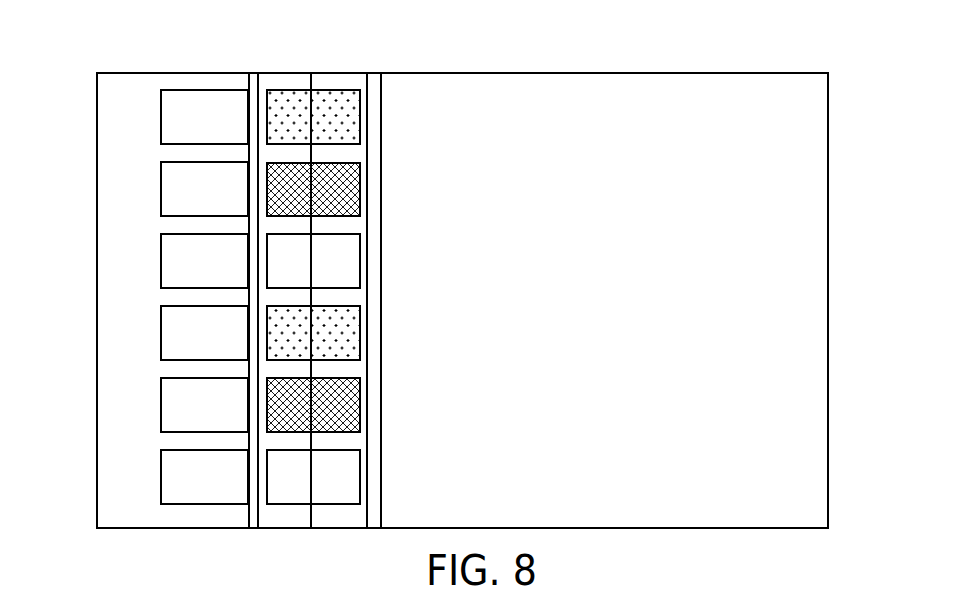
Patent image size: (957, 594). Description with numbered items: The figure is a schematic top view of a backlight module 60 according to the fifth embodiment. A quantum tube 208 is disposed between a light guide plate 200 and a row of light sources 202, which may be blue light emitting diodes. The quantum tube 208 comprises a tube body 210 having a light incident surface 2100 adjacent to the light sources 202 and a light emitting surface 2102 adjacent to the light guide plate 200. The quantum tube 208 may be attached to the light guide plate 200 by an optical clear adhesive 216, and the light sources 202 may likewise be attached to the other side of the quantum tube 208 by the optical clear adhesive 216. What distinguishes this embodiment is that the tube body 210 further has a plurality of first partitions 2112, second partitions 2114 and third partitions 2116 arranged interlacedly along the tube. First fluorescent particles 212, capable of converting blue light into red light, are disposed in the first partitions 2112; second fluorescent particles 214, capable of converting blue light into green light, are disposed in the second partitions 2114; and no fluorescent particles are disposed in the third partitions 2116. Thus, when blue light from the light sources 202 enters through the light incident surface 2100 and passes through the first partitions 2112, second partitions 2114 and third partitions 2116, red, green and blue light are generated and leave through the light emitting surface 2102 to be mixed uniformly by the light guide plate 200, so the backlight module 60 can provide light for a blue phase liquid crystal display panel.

The backlight module 60 is at (748, 44).
The light guide plate 200 is at (665, 329).
The light sources 202 is at (216, 489).
The quantum tube 208 is at (317, 50).
The tube body 210 is at (350, 73).
The optical clear adhesive 216 is at (252, 73).
The light incident surface 2100 is at (256, 152).
The light emitting surface 2102 is at (367, 353).
The first fluorescent particles 212 is at (353, 102).
The second fluorescent particles 214 is at (355, 178).
The first partitions 2112 is at (363, 127).
The second partitions 2114 is at (363, 203).
The third partitions 2116 is at (363, 248).